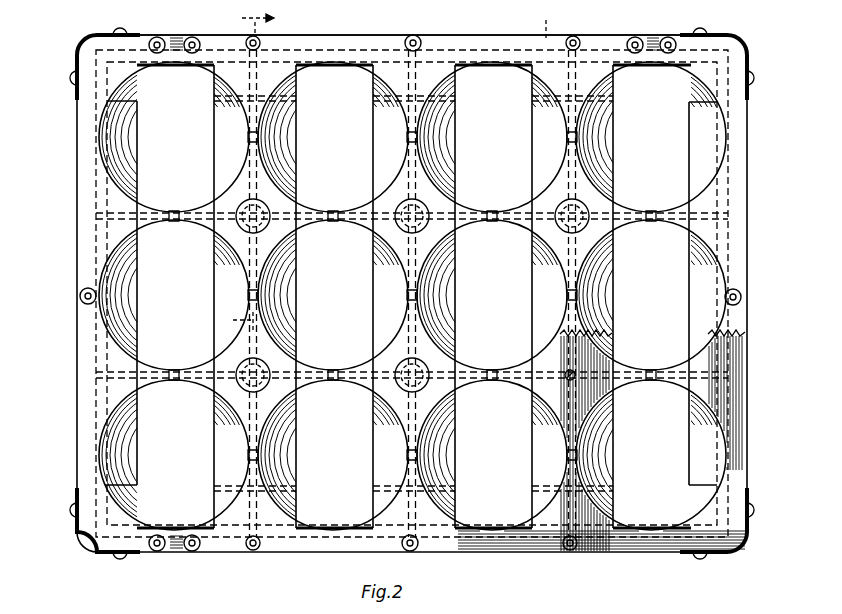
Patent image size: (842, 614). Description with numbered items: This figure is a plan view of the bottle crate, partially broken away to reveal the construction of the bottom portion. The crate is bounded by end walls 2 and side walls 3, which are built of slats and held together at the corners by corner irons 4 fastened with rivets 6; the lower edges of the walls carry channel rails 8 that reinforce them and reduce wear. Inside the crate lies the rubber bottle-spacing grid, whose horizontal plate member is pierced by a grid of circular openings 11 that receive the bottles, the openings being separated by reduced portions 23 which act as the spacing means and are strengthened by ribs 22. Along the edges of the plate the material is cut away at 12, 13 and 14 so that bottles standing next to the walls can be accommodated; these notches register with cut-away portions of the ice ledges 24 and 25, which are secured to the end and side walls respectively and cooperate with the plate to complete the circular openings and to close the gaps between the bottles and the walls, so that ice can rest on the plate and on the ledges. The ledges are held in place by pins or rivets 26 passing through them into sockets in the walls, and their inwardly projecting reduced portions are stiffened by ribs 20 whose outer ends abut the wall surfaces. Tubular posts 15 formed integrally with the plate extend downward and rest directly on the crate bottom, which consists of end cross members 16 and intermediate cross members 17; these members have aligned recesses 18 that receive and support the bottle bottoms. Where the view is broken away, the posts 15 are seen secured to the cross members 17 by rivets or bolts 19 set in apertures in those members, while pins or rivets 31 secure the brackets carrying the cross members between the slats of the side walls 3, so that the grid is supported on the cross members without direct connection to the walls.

The end walls 2 is at (96, 418).
The side walls 3 is at (388, 167).
The corner irons 4 is at (85, 38).
The rivets 6 is at (120, 28).
The channel rails 8 is at (175, 67).
The openings 11 is at (265, 287).
The cut-away portion 12 is at (198, 368).
The cut-away portion 13 is at (245, 145).
The cut-away portion 14 is at (305, 190).
The tubular posts 15 is at (215, 188).
The end cross members 16 is at (745, 400).
The cross members 17 is at (530, 395).
The recesses 18 is at (130, 305).
The rivets or bolts 19 is at (575, 375).
The ribs 20 is at (107, 238).
The ribs 22 is at (352, 195).
The reduced portions 23 is at (335, 205).
The ice ledge 24 is at (96, 205).
The ice ledge 25 is at (318, 40).
The pins or rivets 26 is at (190, 36).
The pins or rivets 31 is at (260, 38).